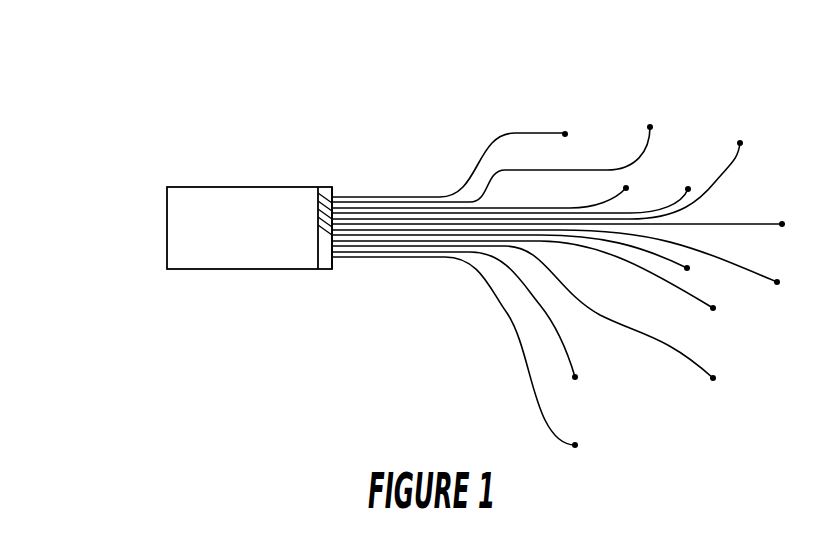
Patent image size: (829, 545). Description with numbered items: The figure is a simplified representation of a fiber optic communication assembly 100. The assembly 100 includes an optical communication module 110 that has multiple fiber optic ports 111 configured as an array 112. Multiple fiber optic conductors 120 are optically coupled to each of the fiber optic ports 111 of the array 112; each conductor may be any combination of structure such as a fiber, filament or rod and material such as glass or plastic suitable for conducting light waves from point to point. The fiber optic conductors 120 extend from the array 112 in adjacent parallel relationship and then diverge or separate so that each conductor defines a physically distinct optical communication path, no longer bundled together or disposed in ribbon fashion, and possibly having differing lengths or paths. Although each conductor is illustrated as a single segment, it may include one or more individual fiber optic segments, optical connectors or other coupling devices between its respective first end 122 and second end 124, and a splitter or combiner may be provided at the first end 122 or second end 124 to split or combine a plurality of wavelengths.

The fiber optic communication assembly 100 is at (112, 166).
The optical communication module 110 is at (270, 239).
The fiber optic ports 111 is at (328, 200).
The array 112 is at (323, 258).
The fiber optic conductors 120 is at (402, 197).
The first end 122 is at (338, 185).
The second end 124 is at (565, 134).